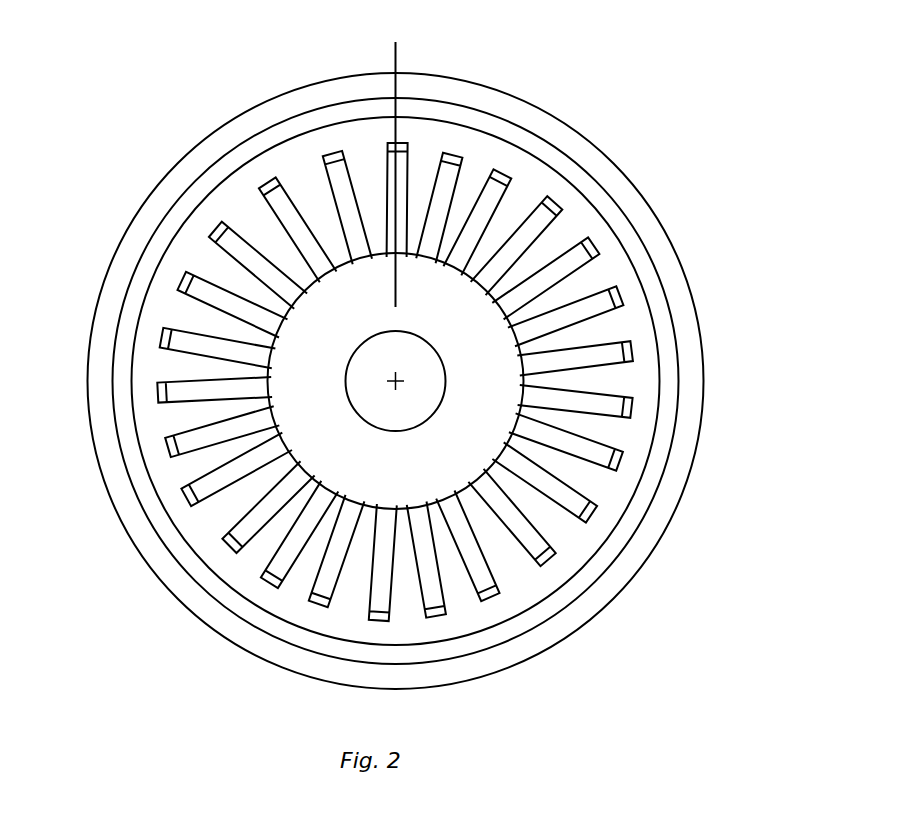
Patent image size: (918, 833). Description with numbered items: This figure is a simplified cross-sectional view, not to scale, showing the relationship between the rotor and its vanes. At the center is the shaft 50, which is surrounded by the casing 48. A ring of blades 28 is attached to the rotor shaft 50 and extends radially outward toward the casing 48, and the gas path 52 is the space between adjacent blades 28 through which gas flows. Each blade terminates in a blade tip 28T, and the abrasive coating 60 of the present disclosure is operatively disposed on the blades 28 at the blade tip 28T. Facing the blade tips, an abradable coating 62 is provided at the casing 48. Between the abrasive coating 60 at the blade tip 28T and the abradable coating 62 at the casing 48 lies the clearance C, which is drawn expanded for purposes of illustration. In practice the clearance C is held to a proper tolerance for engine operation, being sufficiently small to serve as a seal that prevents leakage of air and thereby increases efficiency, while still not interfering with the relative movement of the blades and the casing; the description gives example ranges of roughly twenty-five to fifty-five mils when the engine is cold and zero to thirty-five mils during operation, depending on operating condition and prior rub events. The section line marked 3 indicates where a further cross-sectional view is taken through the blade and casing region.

The blades 28 is at (428, 245).
The blade tip 28T is at (553, 204).
The casing 48 is at (180, 587).
The shaft 50 is at (458, 345).
The gas path 52 is at (530, 197).
The abrasive coating 60 is at (266, 183).
The abradable coating 62 is at (667, 352).
The clearance C is at (207, 217).
The section line 3- 3 is at (358, 307).